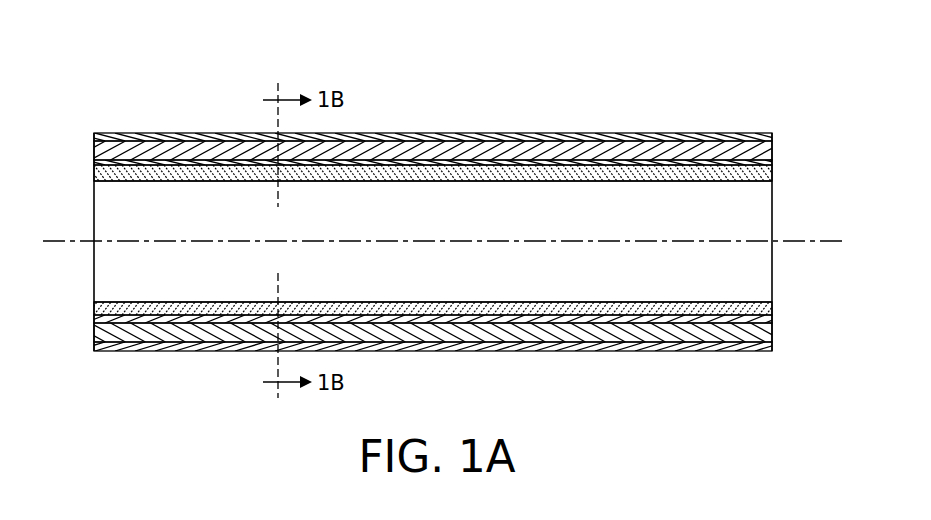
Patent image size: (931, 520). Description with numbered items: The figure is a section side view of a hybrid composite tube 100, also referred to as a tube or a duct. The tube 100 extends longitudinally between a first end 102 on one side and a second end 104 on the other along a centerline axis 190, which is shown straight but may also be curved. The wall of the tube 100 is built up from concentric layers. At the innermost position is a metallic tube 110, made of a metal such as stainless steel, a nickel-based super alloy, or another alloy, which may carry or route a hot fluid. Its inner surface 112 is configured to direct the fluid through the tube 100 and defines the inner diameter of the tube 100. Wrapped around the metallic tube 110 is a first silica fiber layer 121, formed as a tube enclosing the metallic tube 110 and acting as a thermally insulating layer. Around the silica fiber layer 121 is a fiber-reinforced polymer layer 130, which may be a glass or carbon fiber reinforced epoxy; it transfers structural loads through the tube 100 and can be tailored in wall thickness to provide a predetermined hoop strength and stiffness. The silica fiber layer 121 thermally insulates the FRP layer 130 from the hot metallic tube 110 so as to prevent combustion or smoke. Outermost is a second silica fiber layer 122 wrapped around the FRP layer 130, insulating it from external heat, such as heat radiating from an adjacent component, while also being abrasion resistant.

The hybrid composite tube 100 is at (430, 185).
The first end 102 is at (66, 181).
The second end 104 is at (795, 181).
The metallic tube 110 is at (582, 172).
The inner surface 112 is at (697, 182).
The silica fiber layer 121 is at (452, 163).
The silica fiber layer 122 is at (488, 140).
The fiber-reinforced polymer (FRP) layer 130 is at (560, 152).
The centerline axis 190 is at (55, 243).